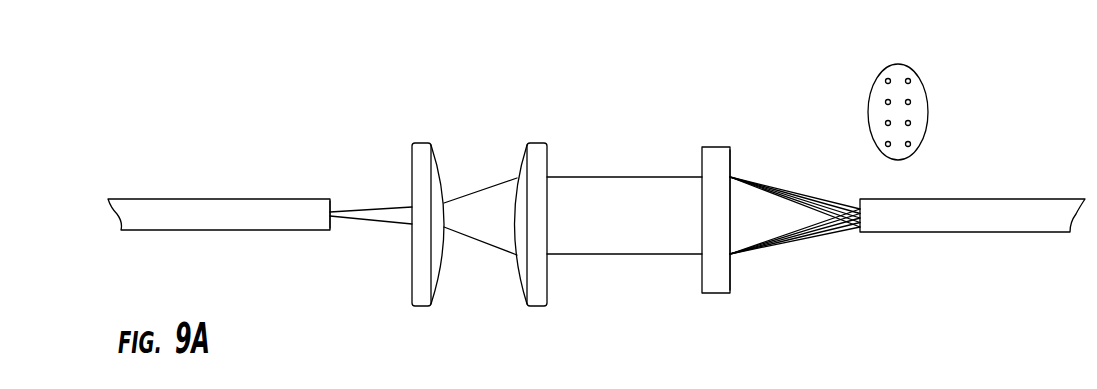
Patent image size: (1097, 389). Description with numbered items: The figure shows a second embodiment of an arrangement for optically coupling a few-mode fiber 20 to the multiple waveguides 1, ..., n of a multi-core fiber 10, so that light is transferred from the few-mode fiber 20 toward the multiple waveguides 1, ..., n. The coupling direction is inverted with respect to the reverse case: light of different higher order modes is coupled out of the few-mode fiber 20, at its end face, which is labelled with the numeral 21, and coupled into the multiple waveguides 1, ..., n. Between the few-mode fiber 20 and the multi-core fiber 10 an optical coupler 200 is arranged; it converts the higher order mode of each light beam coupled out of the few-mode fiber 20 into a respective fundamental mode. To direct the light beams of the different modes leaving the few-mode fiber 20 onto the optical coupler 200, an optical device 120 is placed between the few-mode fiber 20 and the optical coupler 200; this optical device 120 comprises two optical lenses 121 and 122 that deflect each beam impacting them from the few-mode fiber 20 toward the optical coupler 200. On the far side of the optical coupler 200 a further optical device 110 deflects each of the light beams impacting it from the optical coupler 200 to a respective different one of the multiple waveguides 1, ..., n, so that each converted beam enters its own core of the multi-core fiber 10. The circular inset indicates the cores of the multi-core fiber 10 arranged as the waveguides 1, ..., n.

The few-mode fiber 20 is at (220, 231).
The fiber end face 21 is at (320, 212).
The optical device 120 is at (495, 214).
The optical lens 121 is at (418, 306).
The optical lens 122 is at (535, 306).
The optical coupler 200 is at (717, 147).
The optical device 110 is at (732, 168).
The multi-core fiber 10 is at (995, 199).
The waveguide 1 is at (887, 81).
The waveguide n is at (922, 142).